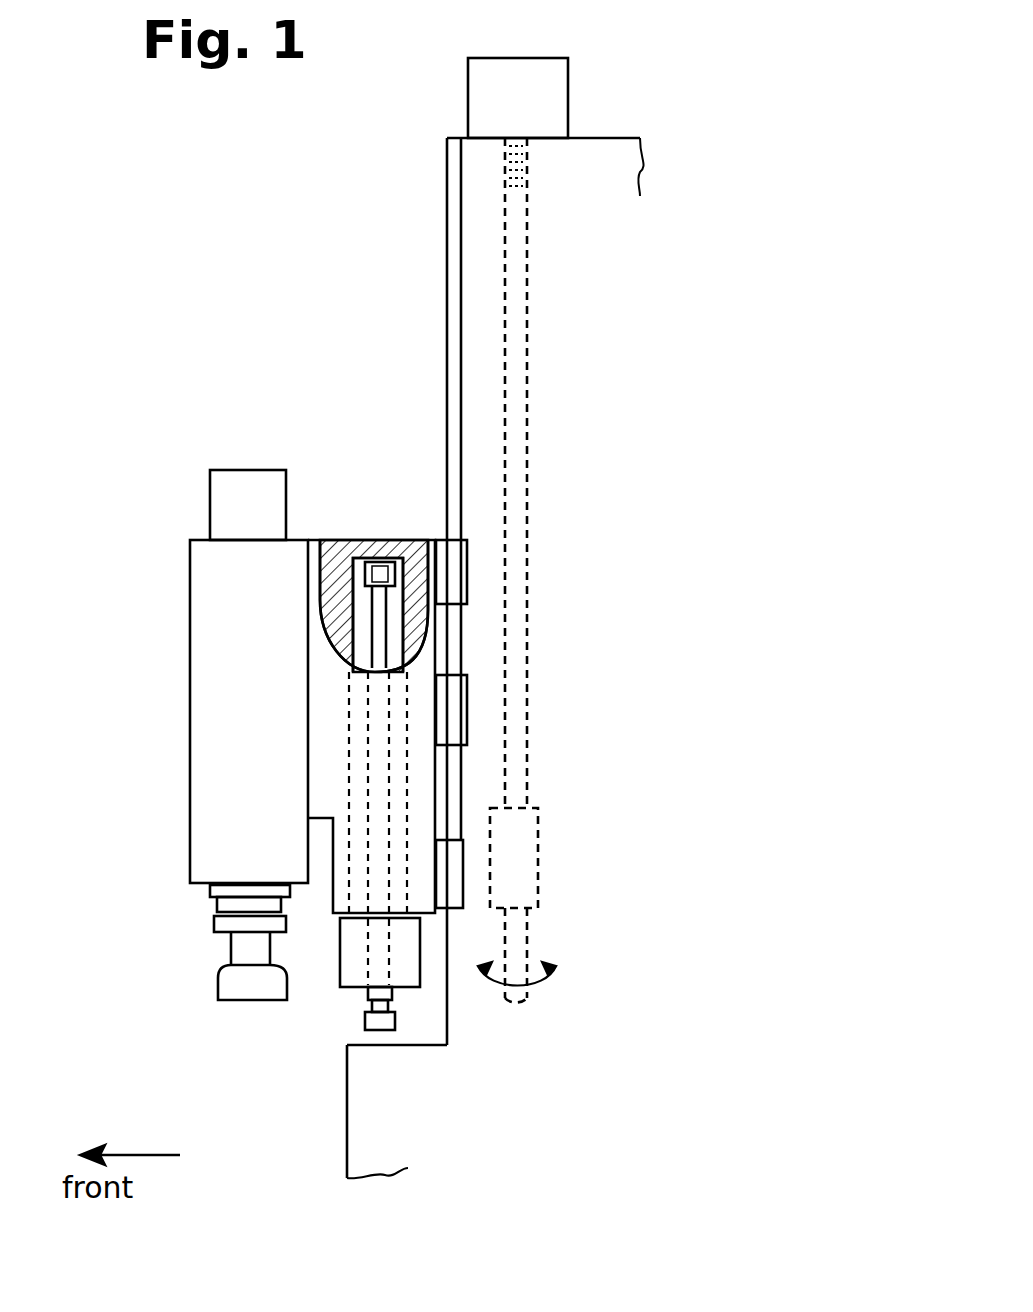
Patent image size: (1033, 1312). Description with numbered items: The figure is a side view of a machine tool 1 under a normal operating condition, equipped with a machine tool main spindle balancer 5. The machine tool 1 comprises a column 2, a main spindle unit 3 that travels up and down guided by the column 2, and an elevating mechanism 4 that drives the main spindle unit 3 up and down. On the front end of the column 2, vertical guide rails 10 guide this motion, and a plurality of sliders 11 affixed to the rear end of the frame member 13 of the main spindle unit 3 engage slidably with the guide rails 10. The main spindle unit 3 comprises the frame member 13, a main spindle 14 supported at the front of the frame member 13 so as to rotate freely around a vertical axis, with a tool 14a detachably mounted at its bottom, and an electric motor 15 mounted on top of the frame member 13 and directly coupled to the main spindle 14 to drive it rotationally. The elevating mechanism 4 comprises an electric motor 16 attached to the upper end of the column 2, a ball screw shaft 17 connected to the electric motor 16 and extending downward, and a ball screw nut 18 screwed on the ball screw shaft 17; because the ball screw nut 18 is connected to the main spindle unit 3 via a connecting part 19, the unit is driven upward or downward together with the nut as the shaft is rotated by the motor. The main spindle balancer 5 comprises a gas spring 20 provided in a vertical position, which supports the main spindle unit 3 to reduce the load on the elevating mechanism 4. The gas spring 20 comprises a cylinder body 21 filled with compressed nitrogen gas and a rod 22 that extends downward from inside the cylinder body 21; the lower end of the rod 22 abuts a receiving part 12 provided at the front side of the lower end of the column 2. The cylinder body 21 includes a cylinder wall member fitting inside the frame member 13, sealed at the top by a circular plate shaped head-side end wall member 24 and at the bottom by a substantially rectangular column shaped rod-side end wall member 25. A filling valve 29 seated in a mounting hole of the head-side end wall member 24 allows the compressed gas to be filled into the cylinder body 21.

The machine tool 1 is at (737, 151).
The column 2 is at (612, 176).
The main spindle unit 3 is at (176, 720).
The elevating mechanism 4 is at (607, 69).
The machine tool main spindle balancer 5 is at (336, 1019).
The vertical guide rails 10 is at (447, 210).
The sliders 11 is at (467, 574).
The receiving part 12 is at (420, 1048).
The frame member 13 is at (190, 655).
The main spindle 14 is at (210, 891).
The tool 14a is at (225, 998).
The electric motor 15 is at (250, 470).
The electric motor 16 is at (568, 102).
The ball screw shaft 17 is at (528, 458).
The ball screw nut 18 is at (558, 885).
The connecting part 19 is at (490, 812).
The gas spring 20 is at (397, 580).
The cylinder body 21 is at (322, 563).
The rod 22 is at (383, 630).
The head-side end wall member 24 is at (337, 540).
The rod-side end wall member 25 is at (342, 970).
The filling valve 29 is at (386, 540).